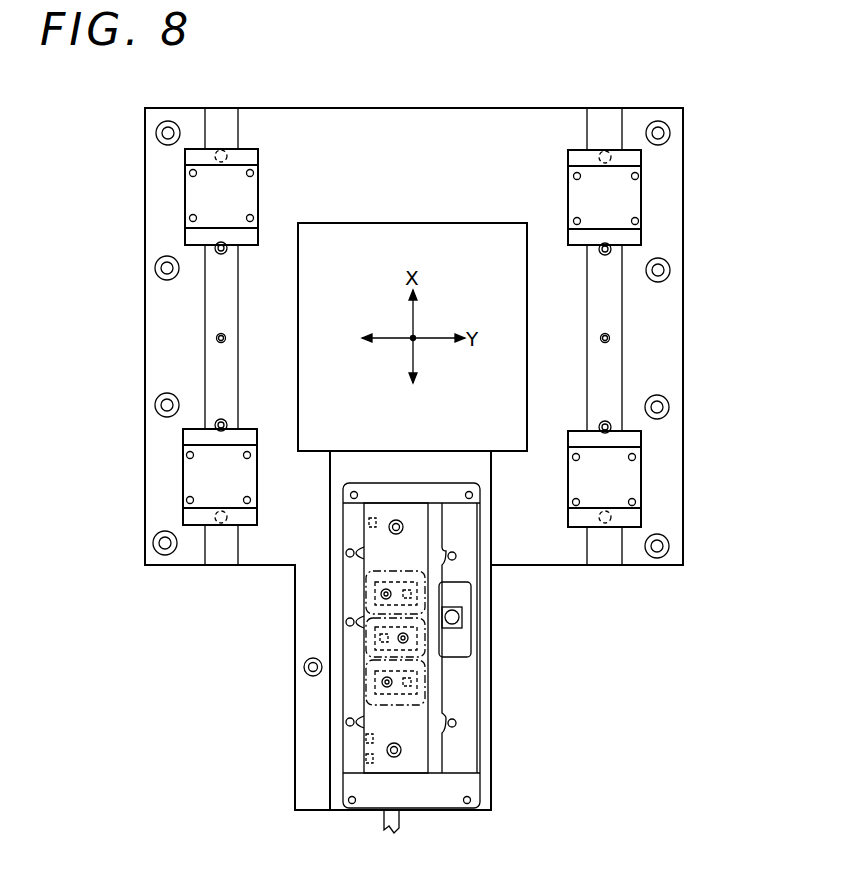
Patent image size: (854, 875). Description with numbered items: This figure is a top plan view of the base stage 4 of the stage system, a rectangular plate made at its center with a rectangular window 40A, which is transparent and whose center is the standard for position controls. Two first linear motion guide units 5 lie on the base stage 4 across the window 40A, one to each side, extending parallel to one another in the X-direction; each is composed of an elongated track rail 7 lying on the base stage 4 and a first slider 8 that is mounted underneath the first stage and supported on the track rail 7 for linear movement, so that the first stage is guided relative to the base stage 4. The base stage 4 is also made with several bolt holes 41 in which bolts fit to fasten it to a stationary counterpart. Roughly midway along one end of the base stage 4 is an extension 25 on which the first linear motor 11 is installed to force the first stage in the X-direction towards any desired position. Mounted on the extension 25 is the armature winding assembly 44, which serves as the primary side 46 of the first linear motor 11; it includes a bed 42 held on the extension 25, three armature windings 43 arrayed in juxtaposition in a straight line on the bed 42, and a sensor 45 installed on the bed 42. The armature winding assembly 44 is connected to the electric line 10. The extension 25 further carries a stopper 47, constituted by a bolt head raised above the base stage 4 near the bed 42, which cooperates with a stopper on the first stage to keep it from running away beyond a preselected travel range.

The base stage 4 is at (443, 138).
The first linear motion guide unit 5 is at (180, 425).
The track rail 7 is at (213, 307).
The first slider 8 is at (212, 193).
The electric line 10 is at (396, 820).
The first linear motor 11 is at (360, 775).
The extension 25 is at (308, 640).
The rectangular window 40A is at (298, 391).
The bolt hole 41 is at (168, 133).
The bed 42 is at (433, 745).
The armature winding 43 is at (403, 638).
The armature winding assembly 44 is at (383, 723).
The sensor 45 is at (463, 638).
The primary side 46 is at (446, 762).
The stopper 47 is at (313, 667).